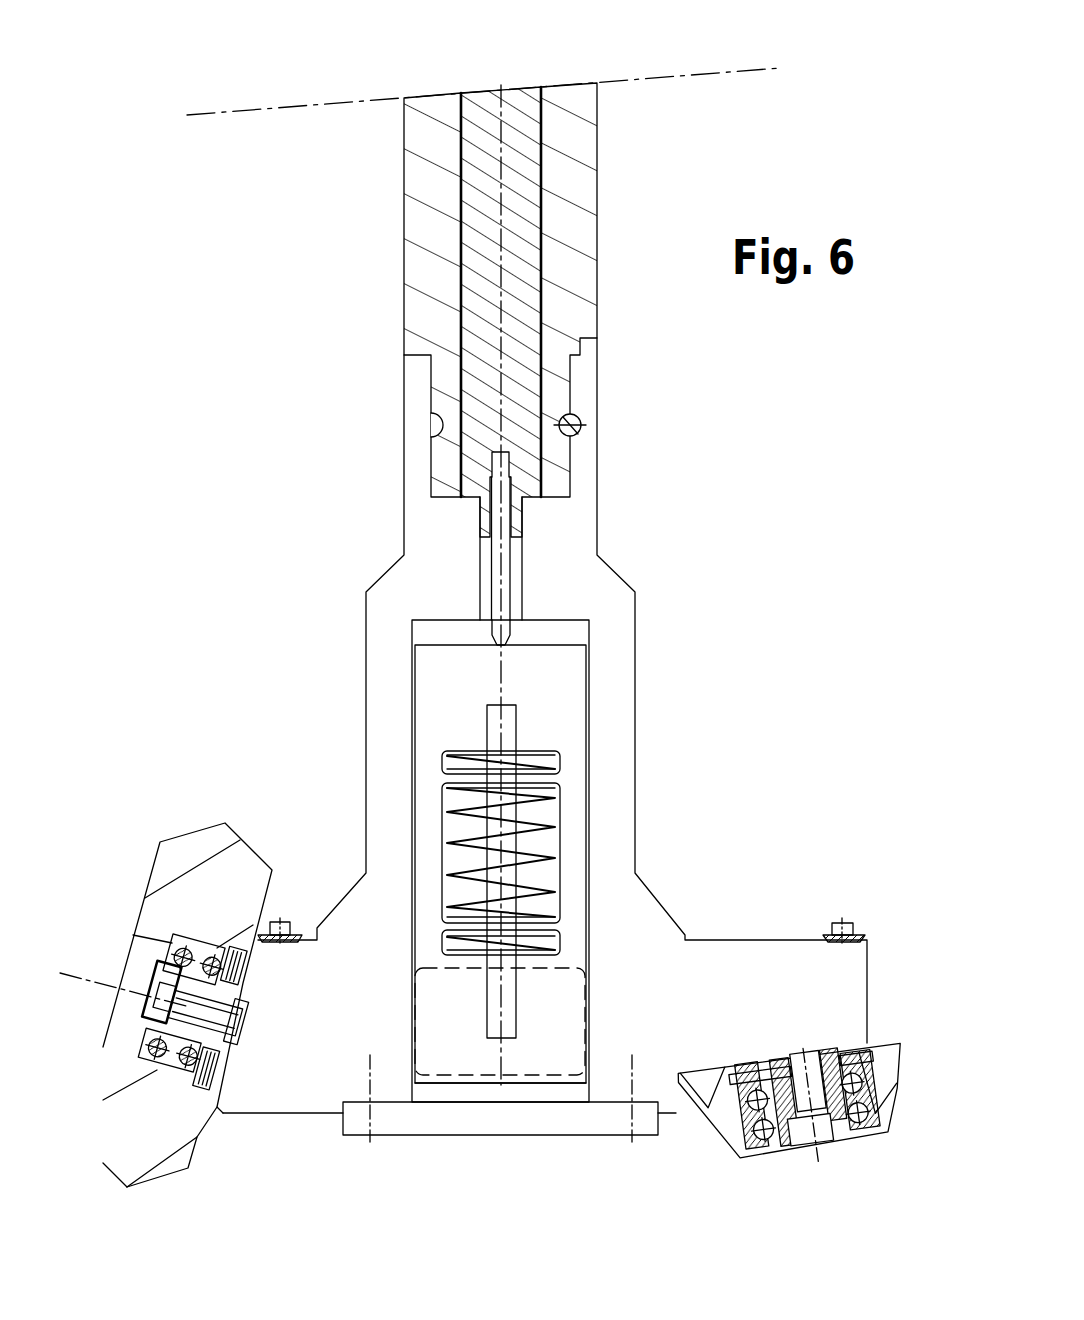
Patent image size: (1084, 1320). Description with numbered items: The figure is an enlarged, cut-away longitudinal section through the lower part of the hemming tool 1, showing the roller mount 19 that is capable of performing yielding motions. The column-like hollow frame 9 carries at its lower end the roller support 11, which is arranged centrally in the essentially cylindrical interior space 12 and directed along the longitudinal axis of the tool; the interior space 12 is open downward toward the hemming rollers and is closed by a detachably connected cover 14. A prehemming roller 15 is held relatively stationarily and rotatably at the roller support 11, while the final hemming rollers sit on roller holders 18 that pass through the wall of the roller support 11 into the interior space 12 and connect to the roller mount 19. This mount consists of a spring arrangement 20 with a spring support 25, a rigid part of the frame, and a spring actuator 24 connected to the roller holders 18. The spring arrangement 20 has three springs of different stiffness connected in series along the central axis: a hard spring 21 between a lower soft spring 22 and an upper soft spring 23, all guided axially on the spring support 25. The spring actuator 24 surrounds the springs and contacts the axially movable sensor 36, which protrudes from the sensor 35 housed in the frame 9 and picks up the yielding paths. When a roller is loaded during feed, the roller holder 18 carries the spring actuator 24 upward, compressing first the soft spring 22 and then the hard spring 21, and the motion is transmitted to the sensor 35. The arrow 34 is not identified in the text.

The hemming tool 1 is at (432, 102).
The frame 9 is at (417, 163).
The roller support 11 is at (607, 592).
The interior space 12 is at (443, 633).
The cover 14 is at (555, 1122).
The prehemming roller 15 is at (192, 853).
The roller holder 18 is at (437, 1074).
The roller mount 19 is at (566, 1097).
The spring arrangement 20 is at (301, 747).
The hard spring 21 is at (550, 840).
The lower soft spring 22 is at (552, 940).
The upper soft spring 23 is at (556, 763).
The spring actuator 24 is at (565, 723).
The spring support 25 is at (485, 727).
The feed direction arrow 34 is at (612, 195).
The sensor 35 is at (487, 320).
The axially movable sensor 36 is at (505, 562).